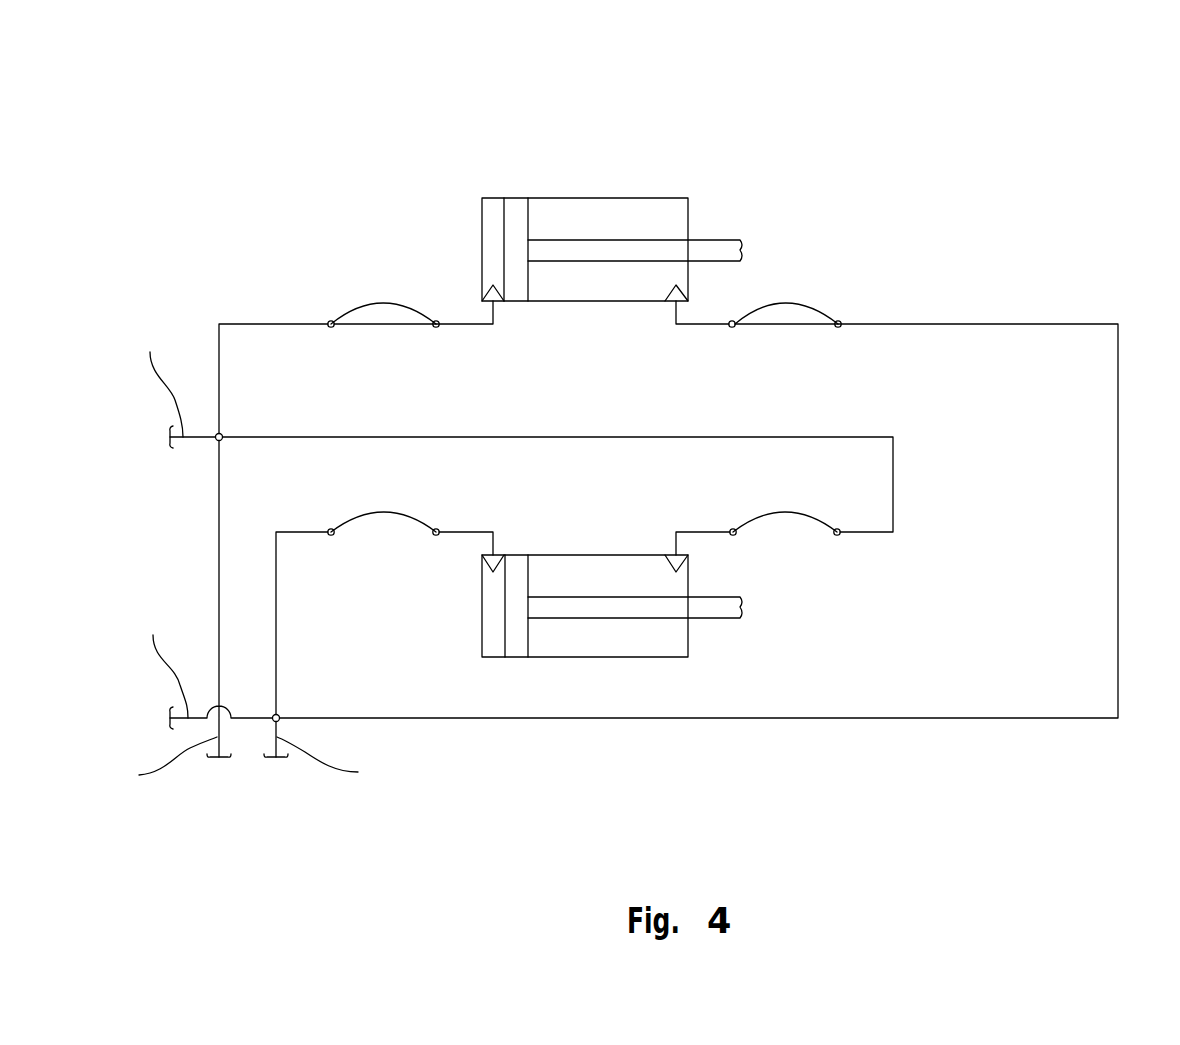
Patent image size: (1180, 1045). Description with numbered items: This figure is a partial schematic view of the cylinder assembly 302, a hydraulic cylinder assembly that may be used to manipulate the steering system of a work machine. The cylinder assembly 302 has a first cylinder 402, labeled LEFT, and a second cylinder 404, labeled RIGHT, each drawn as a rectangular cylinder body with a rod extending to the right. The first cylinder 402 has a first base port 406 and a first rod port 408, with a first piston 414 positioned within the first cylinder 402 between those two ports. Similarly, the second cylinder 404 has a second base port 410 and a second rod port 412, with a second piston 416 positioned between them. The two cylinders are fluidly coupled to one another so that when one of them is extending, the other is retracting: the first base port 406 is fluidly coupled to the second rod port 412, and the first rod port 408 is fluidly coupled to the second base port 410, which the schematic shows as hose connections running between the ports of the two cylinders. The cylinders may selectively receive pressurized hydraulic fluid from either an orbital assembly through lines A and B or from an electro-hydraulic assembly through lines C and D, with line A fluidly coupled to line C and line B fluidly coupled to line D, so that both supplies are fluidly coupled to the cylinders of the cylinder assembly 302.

The cylinder assembly 302 is at (996, 140).
The first cylinder 402 is at (640, 198).
The second cylinder 404 is at (652, 648).
The first base port 406 is at (488, 302).
The first rod port 408 is at (679, 304).
The second base port 410 is at (493, 555).
The second rod port 412 is at (678, 555).
The first piston 414 is at (517, 205).
The second piston 416 is at (517, 650).